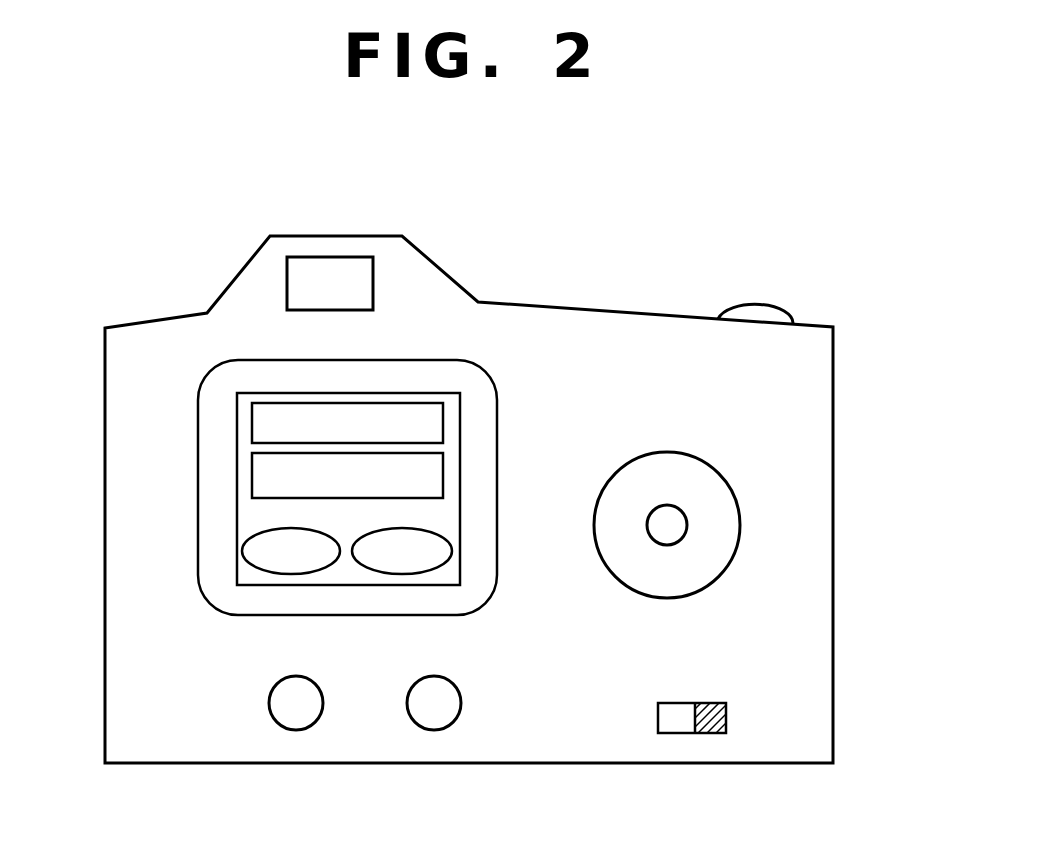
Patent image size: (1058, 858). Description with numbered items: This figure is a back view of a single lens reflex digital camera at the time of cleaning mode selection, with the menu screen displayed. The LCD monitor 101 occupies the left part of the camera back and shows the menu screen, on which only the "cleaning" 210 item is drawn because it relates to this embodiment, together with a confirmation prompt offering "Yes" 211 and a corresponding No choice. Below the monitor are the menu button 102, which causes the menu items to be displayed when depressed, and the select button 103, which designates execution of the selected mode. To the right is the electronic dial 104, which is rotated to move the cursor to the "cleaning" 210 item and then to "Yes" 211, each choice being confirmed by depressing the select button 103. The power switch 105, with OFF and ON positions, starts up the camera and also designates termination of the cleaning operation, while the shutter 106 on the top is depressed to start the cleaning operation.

The LCD monitor 101 is at (227, 367).
The menu button 102 is at (302, 730).
The select button 103 is at (440, 730).
The electronic dial 104 is at (740, 518).
The power switch 105 is at (705, 733).
The shutter 106 is at (758, 302).
The cleaning menu item 210 is at (394, 457).
The Yes selection item 211 is at (242, 549).